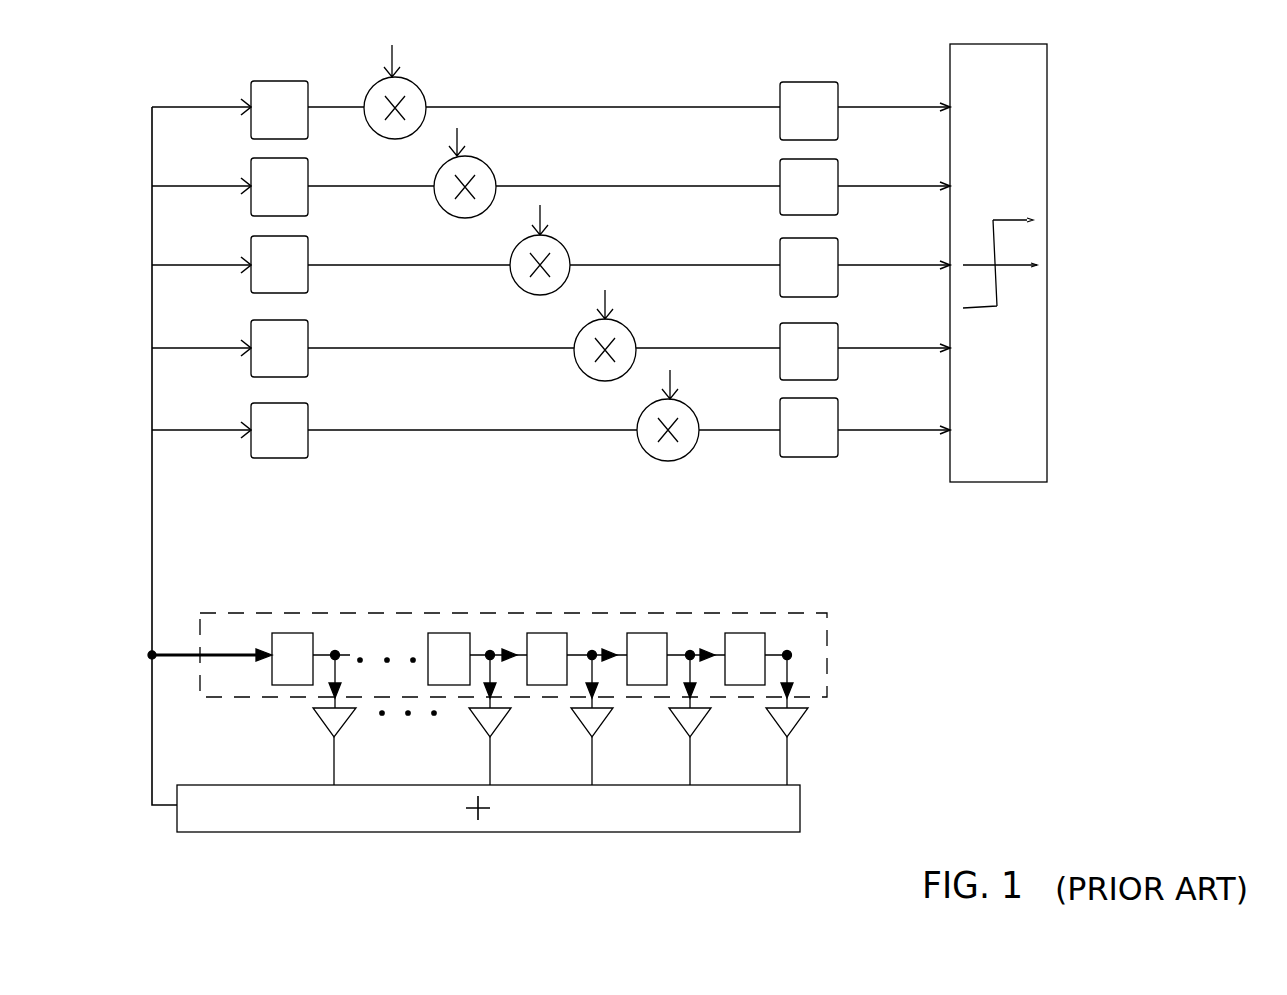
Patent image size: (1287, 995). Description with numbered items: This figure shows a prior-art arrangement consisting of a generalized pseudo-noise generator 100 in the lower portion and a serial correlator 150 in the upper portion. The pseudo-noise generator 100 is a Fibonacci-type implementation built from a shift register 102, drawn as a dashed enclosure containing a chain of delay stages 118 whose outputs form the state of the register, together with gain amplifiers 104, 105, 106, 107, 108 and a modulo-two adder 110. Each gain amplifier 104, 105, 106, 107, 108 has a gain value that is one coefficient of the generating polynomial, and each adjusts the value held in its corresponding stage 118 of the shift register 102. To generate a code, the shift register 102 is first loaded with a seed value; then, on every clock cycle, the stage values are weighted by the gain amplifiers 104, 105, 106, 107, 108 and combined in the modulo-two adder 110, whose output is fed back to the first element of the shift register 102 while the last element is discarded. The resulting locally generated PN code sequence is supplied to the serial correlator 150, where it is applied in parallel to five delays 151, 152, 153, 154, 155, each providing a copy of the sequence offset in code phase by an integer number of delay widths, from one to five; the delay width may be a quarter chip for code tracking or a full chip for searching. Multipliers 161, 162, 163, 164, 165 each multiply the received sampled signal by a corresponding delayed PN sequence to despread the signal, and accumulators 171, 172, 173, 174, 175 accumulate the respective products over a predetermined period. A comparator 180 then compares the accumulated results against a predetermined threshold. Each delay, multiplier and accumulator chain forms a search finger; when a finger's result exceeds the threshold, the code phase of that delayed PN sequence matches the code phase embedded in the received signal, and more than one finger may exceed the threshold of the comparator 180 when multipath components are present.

The pseudo-noise generator 100 is at (647, 743).
The shift register 102 is at (827, 690).
The gain amplifiers 104 is at (322, 722).
The tap weight multiplier 105 is at (500, 724).
The tap weight multiplier 106 is at (603, 724).
The tap weight multiplier 107 is at (700, 726).
The tap weight multiplier gn 108 is at (797, 732).
The modulo-2 adder 110 is at (740, 832).
The delay flip-flop cell 118 is at (272, 678).
The serial correlator 150 is at (707, 269).
The delay 151 is at (308, 131).
The delay 152 is at (308, 208).
The delay 153 is at (308, 284).
The delay 154 is at (308, 368).
The delay 155 is at (308, 450).
The multiplier 161 is at (395, 139).
The multiplier 162 is at (450, 214).
The multiplier 163 is at (527, 292).
The multiplier 164 is at (588, 378).
The multiplier 165 is at (650, 460).
The accumulator 171 is at (816, 82).
The accumulator 172 is at (838, 168).
The accumulator 173 is at (838, 246).
The accumulator 174 is at (838, 331).
The accumulator 175 is at (838, 410).
The comparator 180 is at (1042, 270).